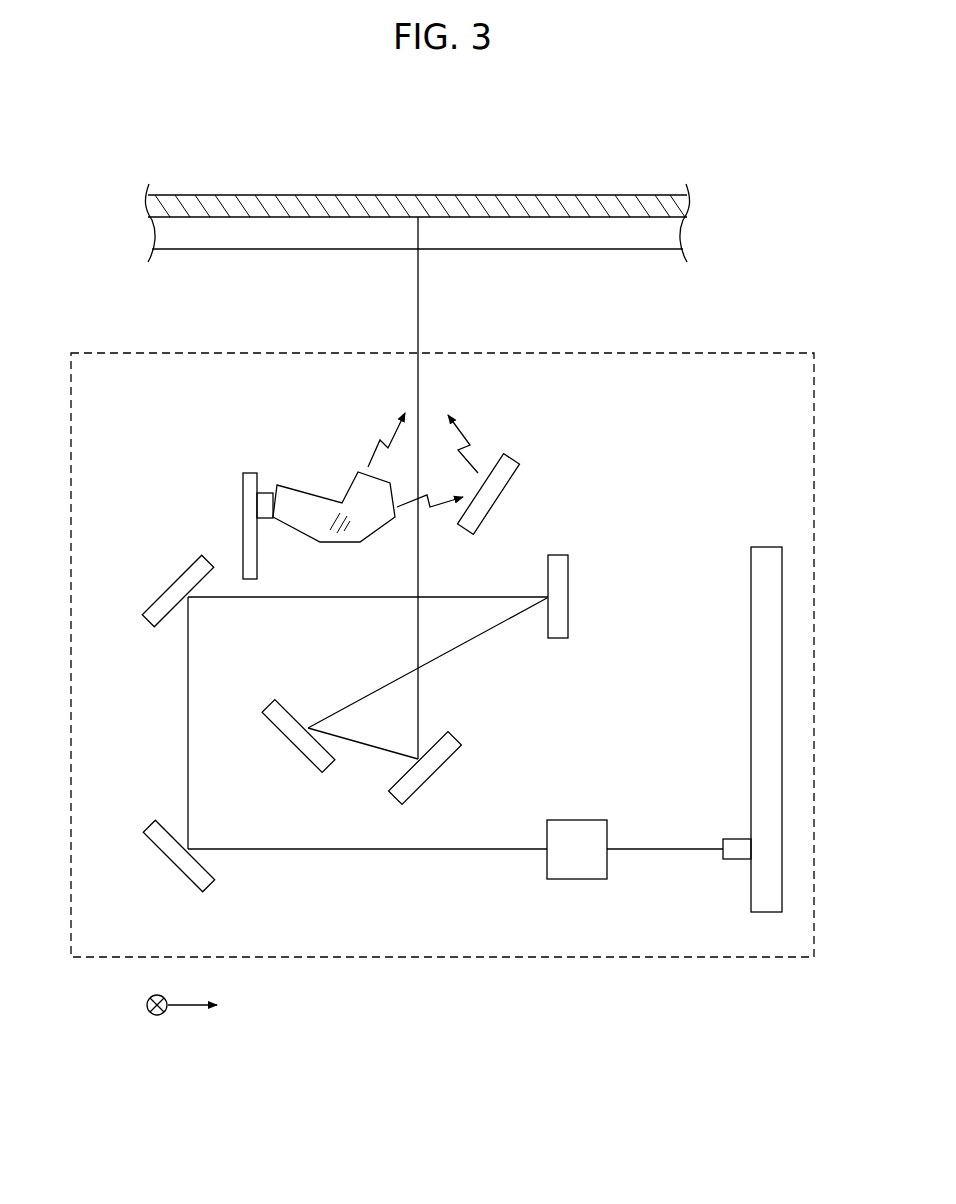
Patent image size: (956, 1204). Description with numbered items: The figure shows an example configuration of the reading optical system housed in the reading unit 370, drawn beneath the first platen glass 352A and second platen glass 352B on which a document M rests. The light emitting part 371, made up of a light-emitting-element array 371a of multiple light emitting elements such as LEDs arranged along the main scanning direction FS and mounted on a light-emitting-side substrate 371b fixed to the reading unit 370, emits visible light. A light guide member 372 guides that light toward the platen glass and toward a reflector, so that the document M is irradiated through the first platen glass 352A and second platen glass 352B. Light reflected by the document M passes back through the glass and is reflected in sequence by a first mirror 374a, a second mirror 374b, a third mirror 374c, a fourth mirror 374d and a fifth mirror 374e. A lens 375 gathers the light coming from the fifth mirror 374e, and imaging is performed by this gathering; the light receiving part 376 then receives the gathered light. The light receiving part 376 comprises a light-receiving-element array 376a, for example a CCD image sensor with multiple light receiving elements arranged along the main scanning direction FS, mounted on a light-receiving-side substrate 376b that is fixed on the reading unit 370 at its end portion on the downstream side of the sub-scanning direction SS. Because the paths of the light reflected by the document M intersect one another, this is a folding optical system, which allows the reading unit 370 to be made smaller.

The document M is at (552, 195).
The first platen glass 352A is at (417, 283).
The second platen glass 352B is at (573, 252).
The reading unit 370 is at (415, 958).
The light emitting part 371 is at (181, 512).
The light-emitting-element array 371a is at (262, 478).
The light-emitting-side substrate 371b is at (243, 502).
The light guide member 372 is at (313, 487).
The first mirror 374a is at (458, 738).
The second mirror 374b is at (287, 708).
The third mirror 374c is at (568, 577).
The fourth mirror 374d is at (168, 585).
The fifth mirror 374e is at (153, 822).
The lens 375 is at (513, 458).
The light receiving part 376 is at (687, 729).
The light-receiving-element array 376a is at (735, 837).
The light-receiving-side substrate 376b is at (752, 733).
The main scanning direction FS is at (157, 1020).
The sub-scanning direction SS is at (207, 1007).